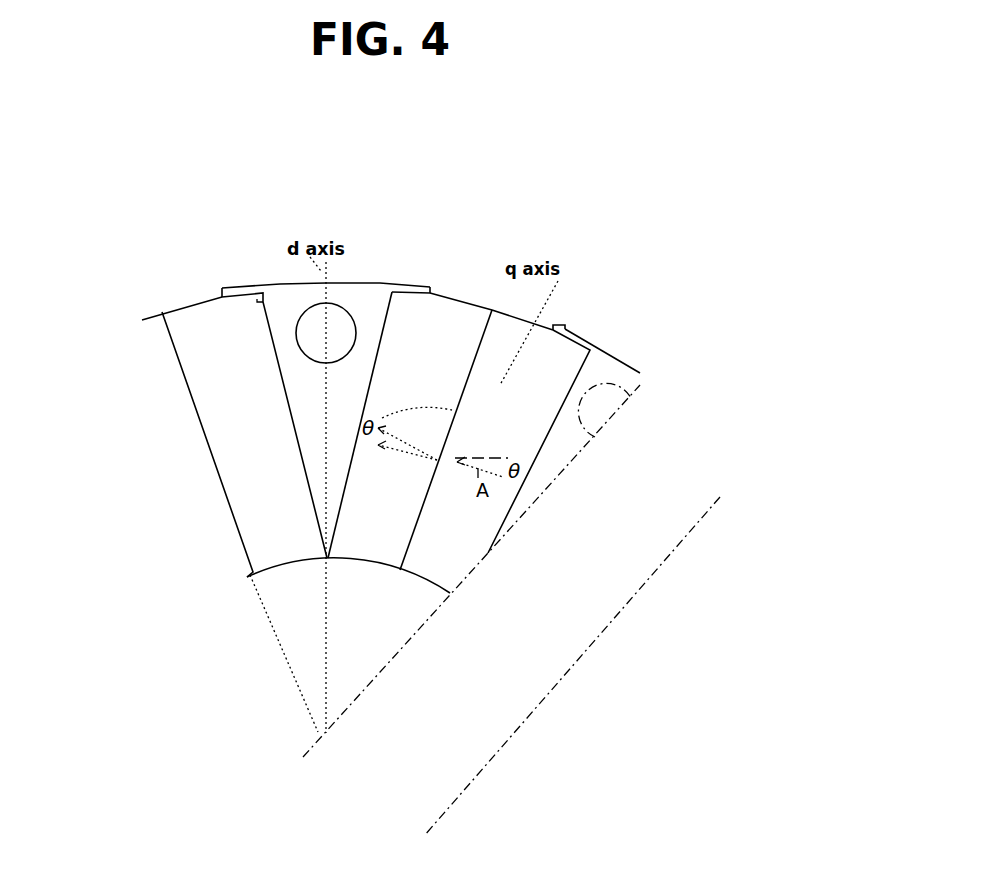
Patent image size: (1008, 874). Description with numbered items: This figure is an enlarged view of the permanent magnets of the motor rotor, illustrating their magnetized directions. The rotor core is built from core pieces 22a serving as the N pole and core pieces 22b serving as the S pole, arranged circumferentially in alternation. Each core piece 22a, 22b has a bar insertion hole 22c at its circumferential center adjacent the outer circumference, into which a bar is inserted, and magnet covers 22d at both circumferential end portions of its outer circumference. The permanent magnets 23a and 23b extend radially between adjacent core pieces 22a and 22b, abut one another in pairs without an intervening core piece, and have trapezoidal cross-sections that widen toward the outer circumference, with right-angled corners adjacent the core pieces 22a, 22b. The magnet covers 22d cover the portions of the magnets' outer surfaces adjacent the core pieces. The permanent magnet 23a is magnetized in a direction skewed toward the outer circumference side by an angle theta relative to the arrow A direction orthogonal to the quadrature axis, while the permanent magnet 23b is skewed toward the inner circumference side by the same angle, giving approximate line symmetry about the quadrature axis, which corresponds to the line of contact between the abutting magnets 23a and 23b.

The core piece 22a is at (339, 290).
The core piece 22b is at (586, 374).
The bar insertion hole 22c is at (305, 320).
The magnet cover 22d is at (237, 286).
The permanent magnet 23a is at (213, 362).
The permanent magnet 23b is at (540, 320).